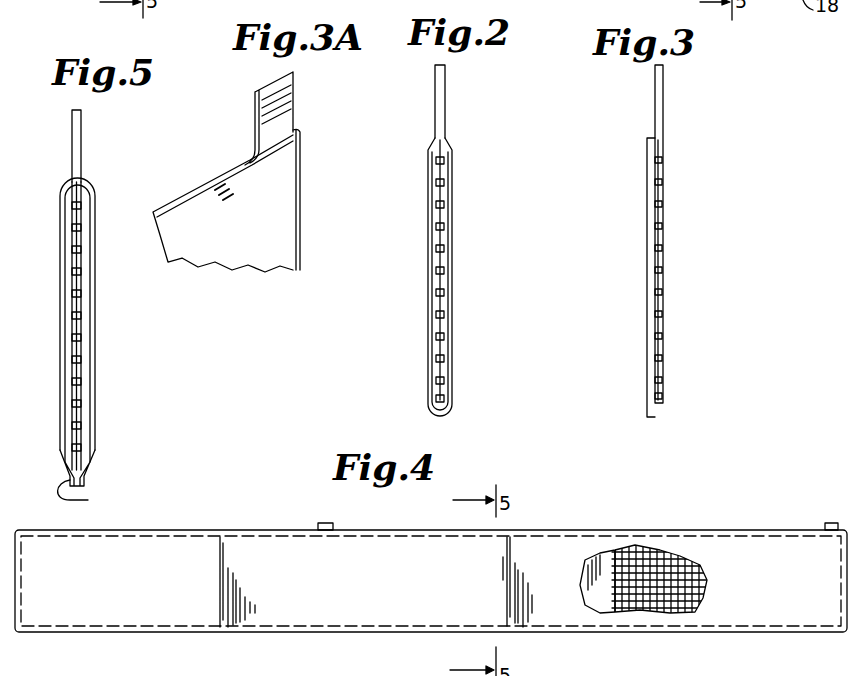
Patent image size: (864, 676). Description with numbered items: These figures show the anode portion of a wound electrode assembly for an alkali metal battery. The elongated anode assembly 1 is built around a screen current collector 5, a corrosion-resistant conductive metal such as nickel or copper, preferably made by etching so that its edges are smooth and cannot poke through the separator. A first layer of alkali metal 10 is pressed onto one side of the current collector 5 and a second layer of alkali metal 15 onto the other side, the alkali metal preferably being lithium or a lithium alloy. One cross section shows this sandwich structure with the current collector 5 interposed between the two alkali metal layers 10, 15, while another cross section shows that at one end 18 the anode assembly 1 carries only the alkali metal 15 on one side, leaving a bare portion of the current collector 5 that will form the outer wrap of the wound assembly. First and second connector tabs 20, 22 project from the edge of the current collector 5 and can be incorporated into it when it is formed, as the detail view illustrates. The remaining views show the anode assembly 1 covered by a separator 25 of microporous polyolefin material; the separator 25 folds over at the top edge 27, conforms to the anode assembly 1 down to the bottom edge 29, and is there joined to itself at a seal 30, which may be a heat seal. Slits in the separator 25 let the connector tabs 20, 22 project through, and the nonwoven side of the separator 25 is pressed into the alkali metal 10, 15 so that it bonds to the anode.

In FIG. 5, the anode assembly 1 is at (88, 356).
In FIG. 2, the anode assembly 1 is at (462, 272).
In FIG. 3, the anode assembly 1 is at (695, 200).
In FIG. 4, the anode assembly 1 is at (540, 530).
In FIG. 5, the current collector 5 is at (75, 316).
In FIG. 3A, the current collector 5 is at (285, 225).
In FIG. 2, the current collector 5 is at (444, 224).
In FIG. 3, the current collector 5 is at (664, 247).
In FIG. 4, the current collector 5 is at (650, 572).
In FIG. 5, the first layer of alkali metal 10 is at (78, 228).
In FIG. 2, the first layer of alkali metal 10 is at (452, 192).
In FIG. 4, the first layer of alkali metal 10 is at (598, 568).
In FIG. 5, the second layer of alkali metal 15 is at (72, 278).
In FIG. 2, the second layer of alkali metal 15 is at (432, 262).
In FIG. 3, the second layer of alkali metal 15 is at (647, 288).
In FIG. 3, the end 18 is at (664, 182).
In FIG. 2, the first connector tab 20 is at (446, 102).
In FIG. 4, the first connector tab 20 is at (325, 523).
In FIG. 5, the second connector tab 22 is at (81, 132).
In FIG. 3A, the second connector tab 22 is at (293, 100).
In FIG. 3, the second connector tab 22 is at (664, 112).
In FIG. 4, the second connector tab 22 is at (831, 523).
In FIG. 5, the separator 25 is at (96, 300).
In FIG. 4, the separator 25 is at (130, 562).
In FIG. 5, the top edge 27 is at (91, 186).
In FIG. 5, the bottom edge 29 is at (96, 456).
In FIG. 5, the seal 30 is at (88, 496).